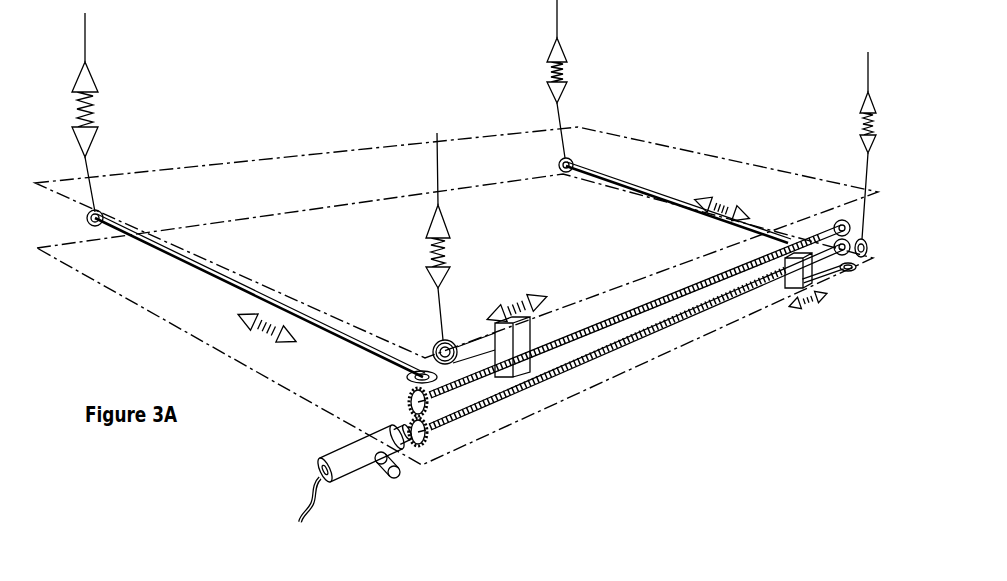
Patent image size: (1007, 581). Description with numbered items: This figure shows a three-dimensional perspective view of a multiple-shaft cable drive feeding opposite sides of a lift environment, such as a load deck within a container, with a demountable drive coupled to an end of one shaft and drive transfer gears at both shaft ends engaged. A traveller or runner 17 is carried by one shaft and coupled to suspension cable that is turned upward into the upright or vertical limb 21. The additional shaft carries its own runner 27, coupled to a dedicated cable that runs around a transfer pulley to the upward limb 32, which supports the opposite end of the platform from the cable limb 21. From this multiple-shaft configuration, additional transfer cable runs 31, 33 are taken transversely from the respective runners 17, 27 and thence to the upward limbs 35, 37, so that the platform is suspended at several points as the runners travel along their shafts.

The upward limb 37 is at (85, 33).
The transfer cable run 33 is at (170, 255).
The upward limb 32 is at (437, 165).
The upward limb 35 is at (557, 13).
The transfer cable run 31 is at (622, 188).
The upright limb 21 is at (868, 78).
The runner 27 is at (519, 350).
The traveller 17 is at (799, 290).